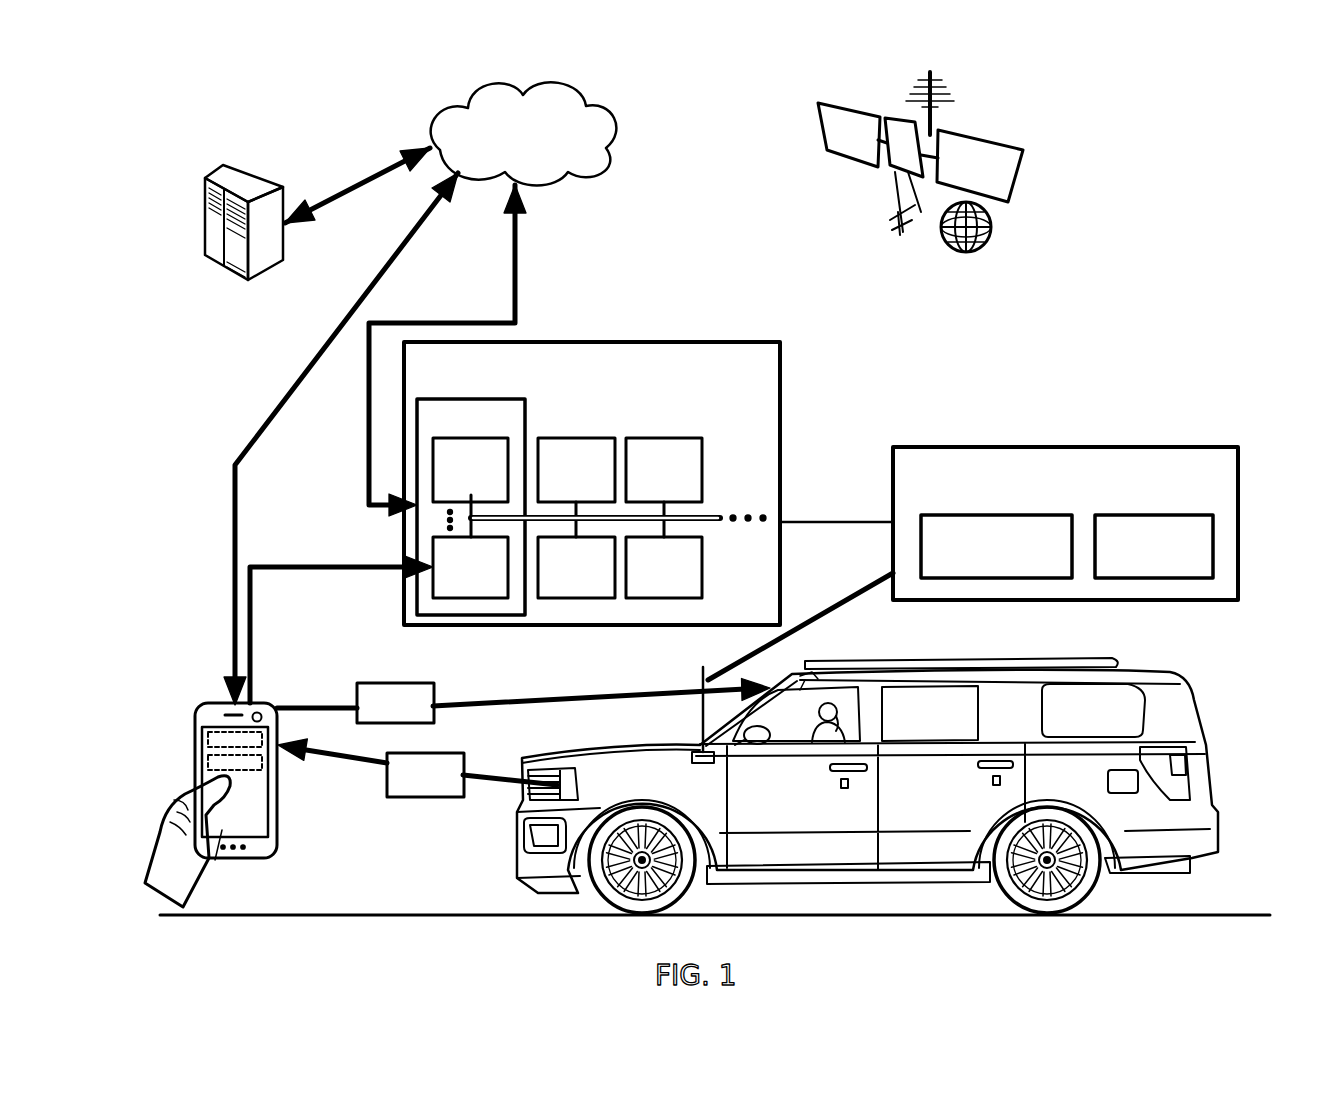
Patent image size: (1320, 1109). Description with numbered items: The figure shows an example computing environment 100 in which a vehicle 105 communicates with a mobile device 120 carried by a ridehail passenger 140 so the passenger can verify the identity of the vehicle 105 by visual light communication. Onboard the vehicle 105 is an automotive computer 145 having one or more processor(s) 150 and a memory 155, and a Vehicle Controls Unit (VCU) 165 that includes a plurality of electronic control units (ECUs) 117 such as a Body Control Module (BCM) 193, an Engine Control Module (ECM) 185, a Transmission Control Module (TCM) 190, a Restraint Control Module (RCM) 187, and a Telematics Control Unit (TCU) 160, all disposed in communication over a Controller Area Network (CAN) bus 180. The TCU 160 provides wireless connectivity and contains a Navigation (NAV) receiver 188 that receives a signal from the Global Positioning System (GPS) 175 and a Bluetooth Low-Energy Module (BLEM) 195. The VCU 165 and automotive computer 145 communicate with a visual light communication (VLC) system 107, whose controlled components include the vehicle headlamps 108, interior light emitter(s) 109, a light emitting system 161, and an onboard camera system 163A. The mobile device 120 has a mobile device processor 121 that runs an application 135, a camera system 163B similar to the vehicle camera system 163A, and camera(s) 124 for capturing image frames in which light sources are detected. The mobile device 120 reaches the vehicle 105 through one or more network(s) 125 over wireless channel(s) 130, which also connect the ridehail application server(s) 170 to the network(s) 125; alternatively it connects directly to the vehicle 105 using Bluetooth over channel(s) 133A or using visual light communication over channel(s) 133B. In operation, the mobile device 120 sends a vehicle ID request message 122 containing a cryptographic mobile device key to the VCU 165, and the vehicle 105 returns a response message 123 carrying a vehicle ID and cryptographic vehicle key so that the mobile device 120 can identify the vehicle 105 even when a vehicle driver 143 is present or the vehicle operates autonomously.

The computing environment 100 is at (1262, 132).
The vehicle 105 is at (725, 769).
The visual light communication (VLC) system 107 is at (1225, 692).
The vehicle headlamps 108 is at (552, 770).
The interior light emitter(s) 109 is at (808, 682).
The electronic control units (ECUs) 117 is at (746, 497).
The mobile device 120 is at (197, 738).
The mobile device processor 121 is at (210, 740).
The vehicle ID request message 122 is at (395, 703).
The response message 123 is at (425, 775).
The camera(s) 124 is at (255, 712).
The network(s) 125 is at (524, 133).
The wireless channel(s) 130 is at (352, 307).
The channel(s) 133A is at (387, 570).
The channel(s) 133B is at (523, 727).
The application 135 is at (210, 763).
The ridehail passenger 140 is at (212, 830).
The vehicle driver 143 is at (858, 697).
The automotive computer 145 is at (1009, 523).
The processor(s) 150 is at (996, 546).
The memory 155 is at (1154, 546).
The Telematics Control Unit (TCU) 160 is at (471, 507).
The light emitting system 161 is at (700, 667).
The camera system 163A is at (643, 670).
The camera system 163B is at (203, 618).
The Vehicle Controls Unit (VCU) 165 is at (592, 483).
The ridehail application server(s) 170 is at (240, 167).
The Global Positioning System (GPS) 175 is at (982, 140).
The Controller Area Network (CAN) bus 180 is at (705, 522).
The Engine Control Module (ECM) 185 is at (664, 470).
The Restraint Control Module (RCM) 187 is at (664, 567).
The Navigation (NAV) receiver 188 is at (470, 470).
The Transmission Control Module (TCM) 190 is at (576, 567).
The Body Control Module (BCM) 193 is at (576, 470).
The Bluetooth Low-Energy Module (BLEM) 195 is at (470, 567).